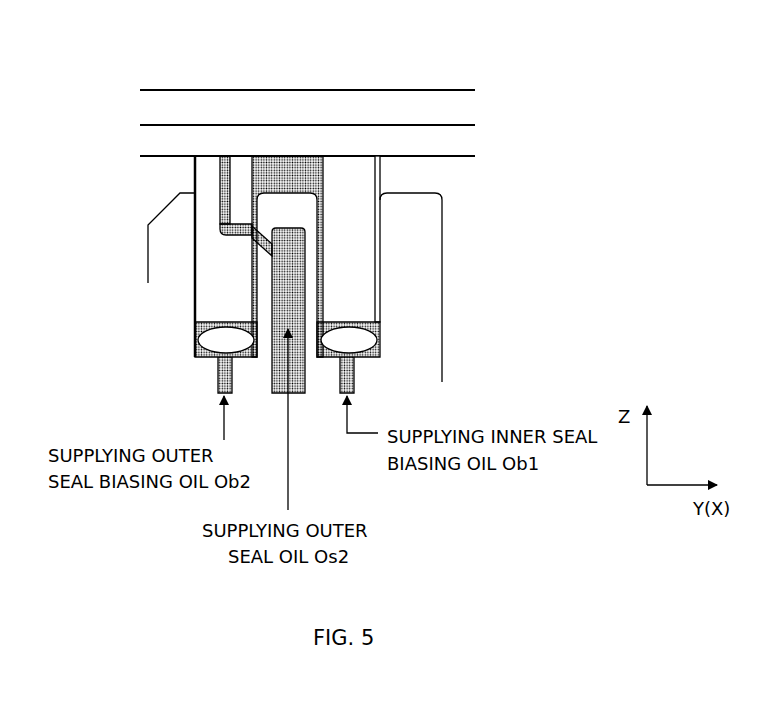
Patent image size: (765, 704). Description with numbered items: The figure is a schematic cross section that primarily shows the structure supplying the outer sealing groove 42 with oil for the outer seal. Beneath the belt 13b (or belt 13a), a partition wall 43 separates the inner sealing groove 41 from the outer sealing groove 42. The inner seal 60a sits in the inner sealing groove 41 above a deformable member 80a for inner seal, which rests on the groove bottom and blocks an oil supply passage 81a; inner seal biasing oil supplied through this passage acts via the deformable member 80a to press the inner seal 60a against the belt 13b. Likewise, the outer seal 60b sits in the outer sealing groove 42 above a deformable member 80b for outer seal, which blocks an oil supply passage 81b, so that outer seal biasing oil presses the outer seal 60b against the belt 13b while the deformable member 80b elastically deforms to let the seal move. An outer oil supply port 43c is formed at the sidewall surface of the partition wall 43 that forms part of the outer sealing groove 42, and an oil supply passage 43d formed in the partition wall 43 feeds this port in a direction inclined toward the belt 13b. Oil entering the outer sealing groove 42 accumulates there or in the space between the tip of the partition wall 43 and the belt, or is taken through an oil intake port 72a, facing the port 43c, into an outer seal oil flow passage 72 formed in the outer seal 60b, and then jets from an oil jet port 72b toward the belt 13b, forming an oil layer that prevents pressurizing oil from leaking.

The belt 13a is at (450, 108).
The belt 13b is at (455, 143).
The inner sealing groove 41 is at (380, 325).
The outer sealing groove 42 is at (194, 328).
The partition wall 43 is at (297, 208).
The outer oil supply port 43c is at (272, 245).
The oil supply passage 43d is at (305, 370).
The inner seal 60a is at (360, 262).
The outer seal 60b is at (218, 273).
The outer seal oil flow passage 72 is at (184, 206).
The oil intake port 72a is at (220, 228).
The oil jet port 72b is at (220, 172).
The deformable member for inner seal 80a is at (355, 340).
The deformable member for outer seal 80b is at (210, 341).
The oil supply passage 81a is at (357, 375).
The oil supply passage 81b is at (218, 380).